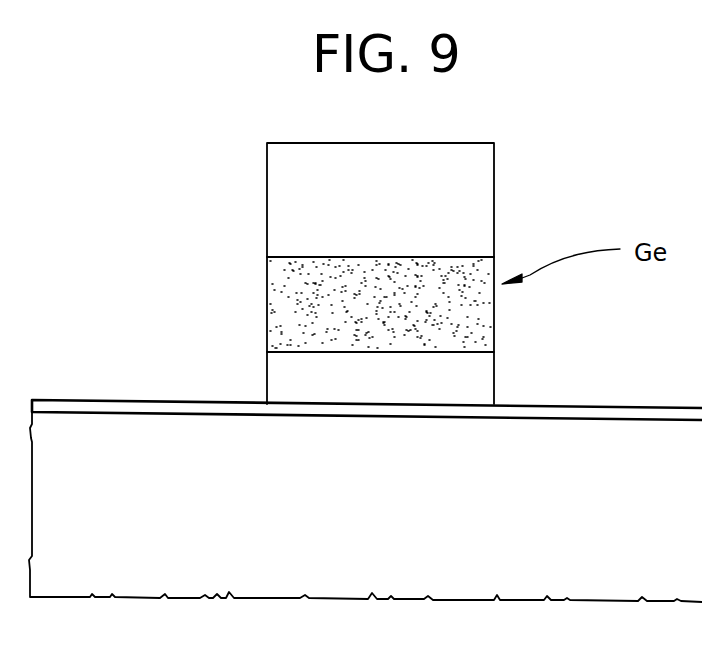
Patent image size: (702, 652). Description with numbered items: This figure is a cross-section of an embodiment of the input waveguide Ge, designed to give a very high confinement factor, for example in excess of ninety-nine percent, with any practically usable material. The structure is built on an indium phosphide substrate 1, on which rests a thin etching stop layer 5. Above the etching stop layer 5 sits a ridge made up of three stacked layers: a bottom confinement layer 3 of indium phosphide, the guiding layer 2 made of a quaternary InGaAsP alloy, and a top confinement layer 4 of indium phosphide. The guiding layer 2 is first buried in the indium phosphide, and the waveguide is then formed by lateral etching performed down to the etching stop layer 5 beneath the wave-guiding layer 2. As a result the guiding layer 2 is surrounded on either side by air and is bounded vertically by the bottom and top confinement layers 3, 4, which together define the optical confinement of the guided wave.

The InP substrate 1 is at (67, 447).
The guiding layer 2 is at (285, 284).
The bottom confinement layer 3 is at (283, 373).
The top confinement layer 4 is at (299, 194).
The etching stop layer 5 is at (125, 404).